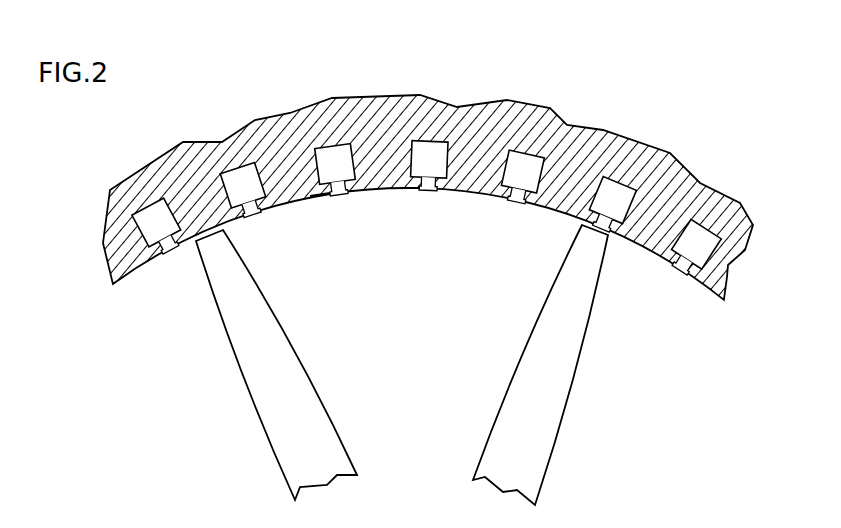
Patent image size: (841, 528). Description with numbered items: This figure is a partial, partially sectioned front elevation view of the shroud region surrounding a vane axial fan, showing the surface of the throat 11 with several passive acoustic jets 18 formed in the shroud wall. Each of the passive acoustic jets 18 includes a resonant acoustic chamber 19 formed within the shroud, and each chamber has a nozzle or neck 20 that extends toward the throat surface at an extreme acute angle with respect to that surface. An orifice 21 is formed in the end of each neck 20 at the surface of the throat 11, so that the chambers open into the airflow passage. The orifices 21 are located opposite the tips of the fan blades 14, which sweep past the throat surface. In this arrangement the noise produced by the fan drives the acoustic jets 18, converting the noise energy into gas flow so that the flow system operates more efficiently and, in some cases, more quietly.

The throat 11 is at (485, 188).
The blades 14 is at (271, 412).
The passive acoustic jets 18 is at (422, 194).
The resonant acoustic chamber 19 is at (426, 205).
The neck 20 is at (233, 212).
The orifice 21 is at (338, 192).